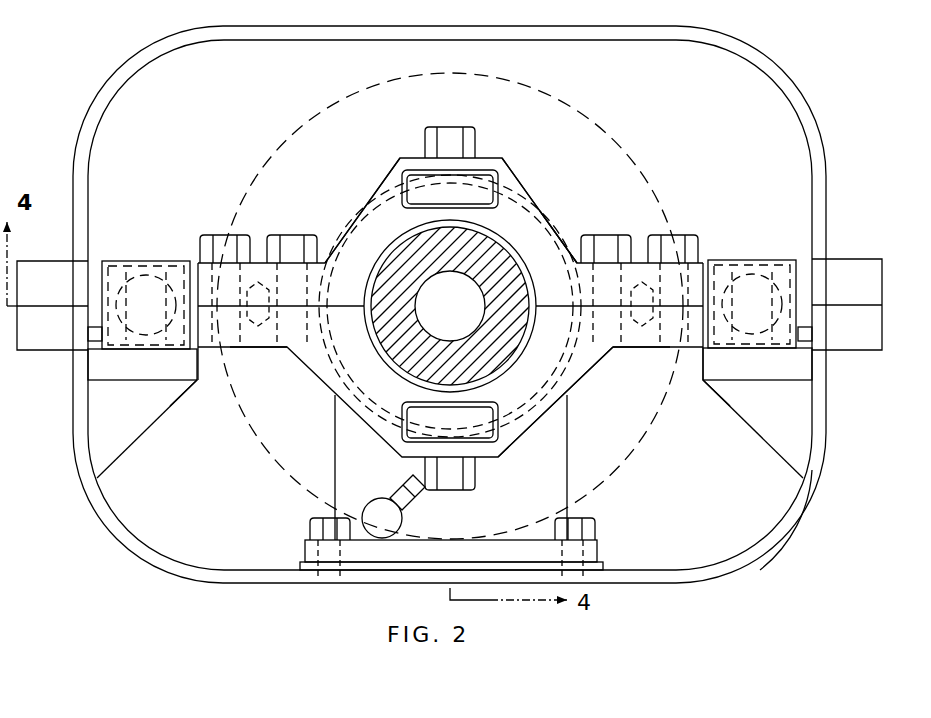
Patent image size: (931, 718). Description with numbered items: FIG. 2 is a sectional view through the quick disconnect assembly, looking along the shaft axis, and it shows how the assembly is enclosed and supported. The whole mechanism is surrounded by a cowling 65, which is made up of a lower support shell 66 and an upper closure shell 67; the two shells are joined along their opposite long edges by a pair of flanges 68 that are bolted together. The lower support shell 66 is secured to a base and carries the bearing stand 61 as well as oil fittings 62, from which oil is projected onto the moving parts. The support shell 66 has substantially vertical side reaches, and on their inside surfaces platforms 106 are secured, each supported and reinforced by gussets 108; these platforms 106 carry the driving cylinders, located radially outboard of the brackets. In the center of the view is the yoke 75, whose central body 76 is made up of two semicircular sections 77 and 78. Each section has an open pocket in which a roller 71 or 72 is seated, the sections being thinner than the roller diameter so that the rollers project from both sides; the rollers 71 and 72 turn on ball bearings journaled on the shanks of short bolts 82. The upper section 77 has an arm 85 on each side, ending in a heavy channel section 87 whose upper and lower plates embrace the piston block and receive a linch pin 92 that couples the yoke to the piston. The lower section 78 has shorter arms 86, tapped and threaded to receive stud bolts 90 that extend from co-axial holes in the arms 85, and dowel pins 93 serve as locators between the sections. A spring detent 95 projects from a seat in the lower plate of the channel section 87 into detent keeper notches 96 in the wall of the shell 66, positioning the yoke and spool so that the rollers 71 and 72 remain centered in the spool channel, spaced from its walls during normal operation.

The bearing stand 61 is at (598, 556).
The oil fittings 62 is at (381, 497).
The cowling 65 is at (820, 52).
The lower support shell 66 is at (814, 494).
The upper closure shell 67 is at (160, 40).
The flanges 68 is at (63, 261).
The roller 71 is at (475, 185).
The roller 72 is at (482, 430).
The yoke 75 is at (590, 212).
The central body 76 is at (520, 196).
The semicircular section 77 is at (360, 227).
The semicircular section 78 is at (517, 436).
The bolts 82 is at (463, 133).
The arm 85 is at (198, 277).
The shorter arms 86 is at (248, 347).
The channel section 87 is at (448, 287).
The stud bolts 90 is at (203, 235).
The linch pin 92 is at (112, 266).
The dowel pins 93 is at (256, 320).
The detent 95 is at (95, 346).
The detent keeper notches 96 is at (88, 336).
The platforms 106 is at (178, 365).
The gussets 108 is at (118, 420).